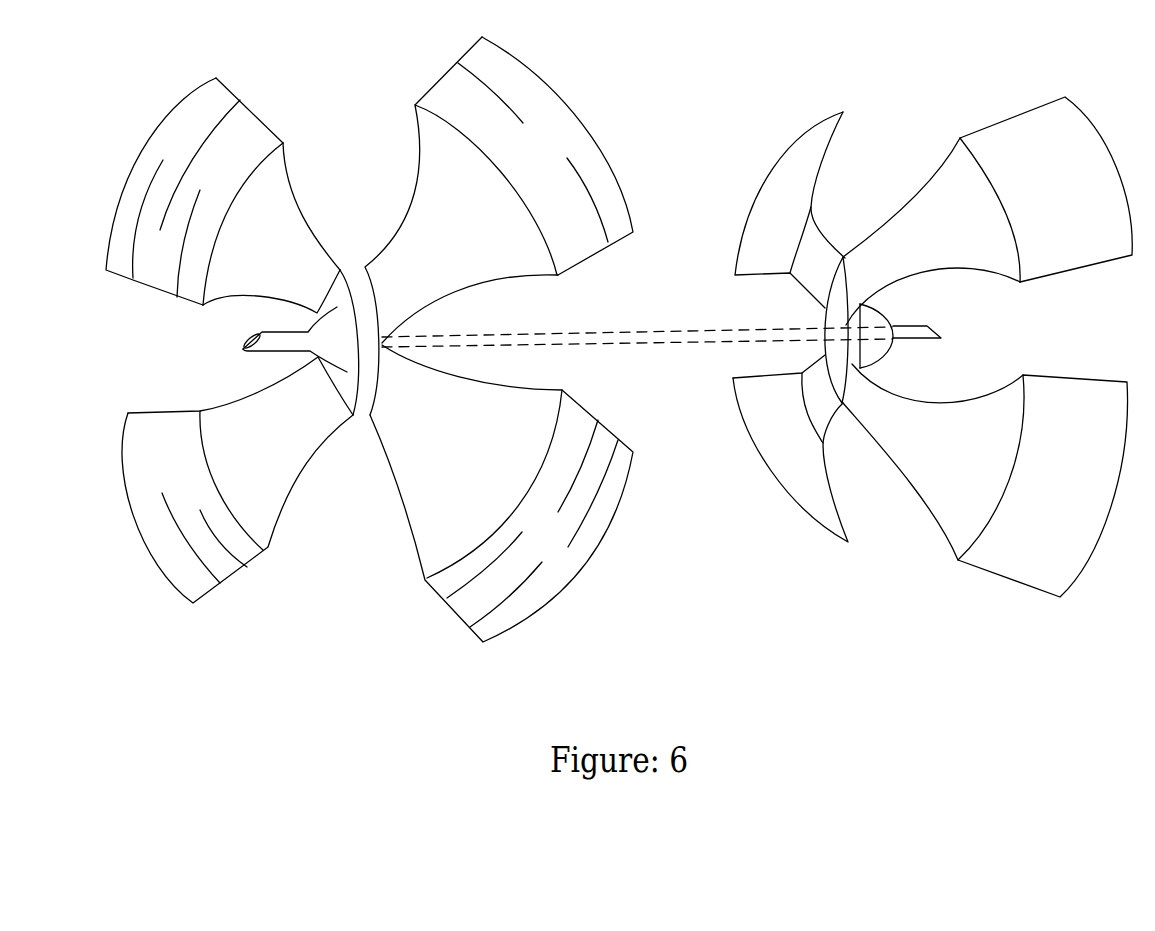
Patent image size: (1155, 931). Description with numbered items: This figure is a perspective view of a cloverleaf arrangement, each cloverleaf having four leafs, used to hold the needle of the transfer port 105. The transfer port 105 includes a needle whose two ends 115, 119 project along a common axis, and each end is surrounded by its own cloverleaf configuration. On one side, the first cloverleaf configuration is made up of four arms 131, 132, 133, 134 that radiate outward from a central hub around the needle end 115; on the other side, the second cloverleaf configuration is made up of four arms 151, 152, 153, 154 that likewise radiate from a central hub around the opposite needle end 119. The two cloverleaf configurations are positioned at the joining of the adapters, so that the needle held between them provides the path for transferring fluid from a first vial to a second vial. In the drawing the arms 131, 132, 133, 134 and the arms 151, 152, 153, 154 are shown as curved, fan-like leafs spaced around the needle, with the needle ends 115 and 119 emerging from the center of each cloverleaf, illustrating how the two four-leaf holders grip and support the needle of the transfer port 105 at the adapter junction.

The transfer port 105 is at (678, 343).
The end of needle 115 is at (267, 353).
The end of needle 119 is at (930, 338).
The arm 131 is at (297, 243).
The arm 132 is at (265, 475).
The arm 133 is at (437, 190).
The arm 134 is at (447, 483).
The arm 151 is at (938, 207).
The arm 152 is at (932, 487).
The arm 153 is at (790, 162).
The arm 154 is at (798, 483).